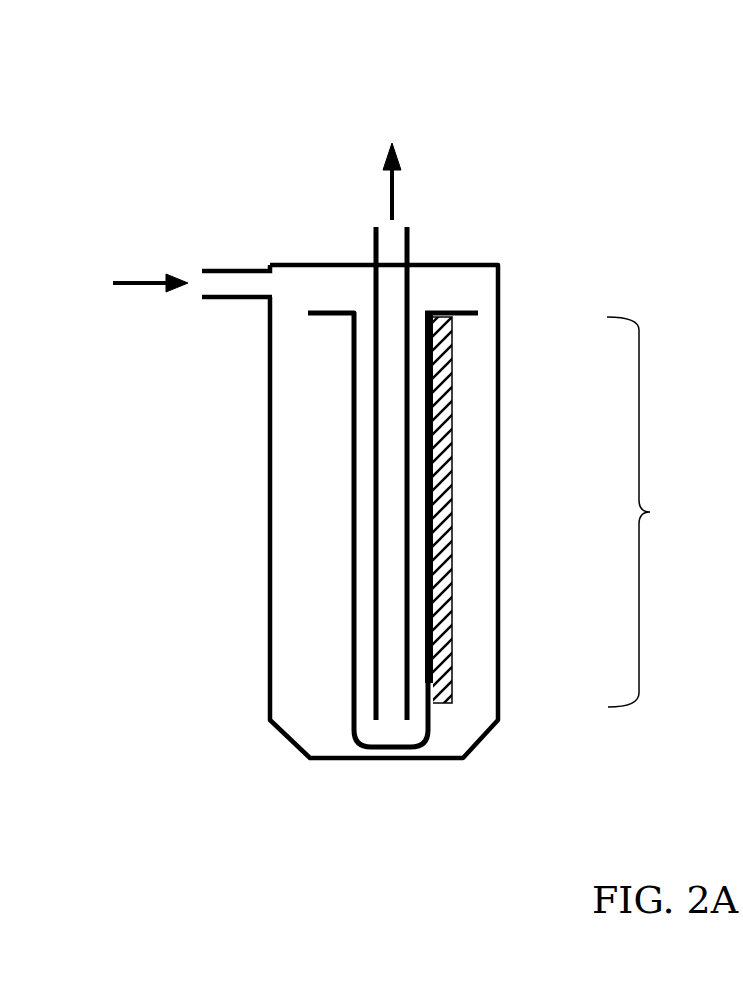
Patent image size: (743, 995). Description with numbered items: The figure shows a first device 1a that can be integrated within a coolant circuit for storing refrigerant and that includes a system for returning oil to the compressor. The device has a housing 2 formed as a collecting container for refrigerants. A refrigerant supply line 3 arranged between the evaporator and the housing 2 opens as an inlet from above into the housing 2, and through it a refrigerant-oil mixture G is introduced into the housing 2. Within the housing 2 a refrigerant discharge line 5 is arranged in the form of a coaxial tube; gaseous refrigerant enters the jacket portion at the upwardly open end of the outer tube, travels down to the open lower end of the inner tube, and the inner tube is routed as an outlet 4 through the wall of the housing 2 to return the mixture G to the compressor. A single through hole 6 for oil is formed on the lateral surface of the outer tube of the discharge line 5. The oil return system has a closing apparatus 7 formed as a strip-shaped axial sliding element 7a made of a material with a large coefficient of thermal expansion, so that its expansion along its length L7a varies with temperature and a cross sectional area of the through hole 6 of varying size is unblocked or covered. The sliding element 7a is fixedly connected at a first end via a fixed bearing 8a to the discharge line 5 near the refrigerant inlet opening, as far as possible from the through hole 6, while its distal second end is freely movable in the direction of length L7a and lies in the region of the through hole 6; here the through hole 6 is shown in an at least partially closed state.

The first device 1a is at (586, 191).
The housing 2 is at (503, 290).
The refrigerant supply line 3 is at (234, 273).
The outlet 4 is at (410, 237).
The refrigerant discharge line 5 is at (362, 525).
The through hole 6 is at (423, 705).
The closing apparatus 7 is at (450, 522).
The axial sliding element 7a is at (429, 498).
The fixed bearing 8a is at (465, 323).
The refrigerant-oil mixture G is at (167, 278).
The length of sliding element L7a is at (654, 512).